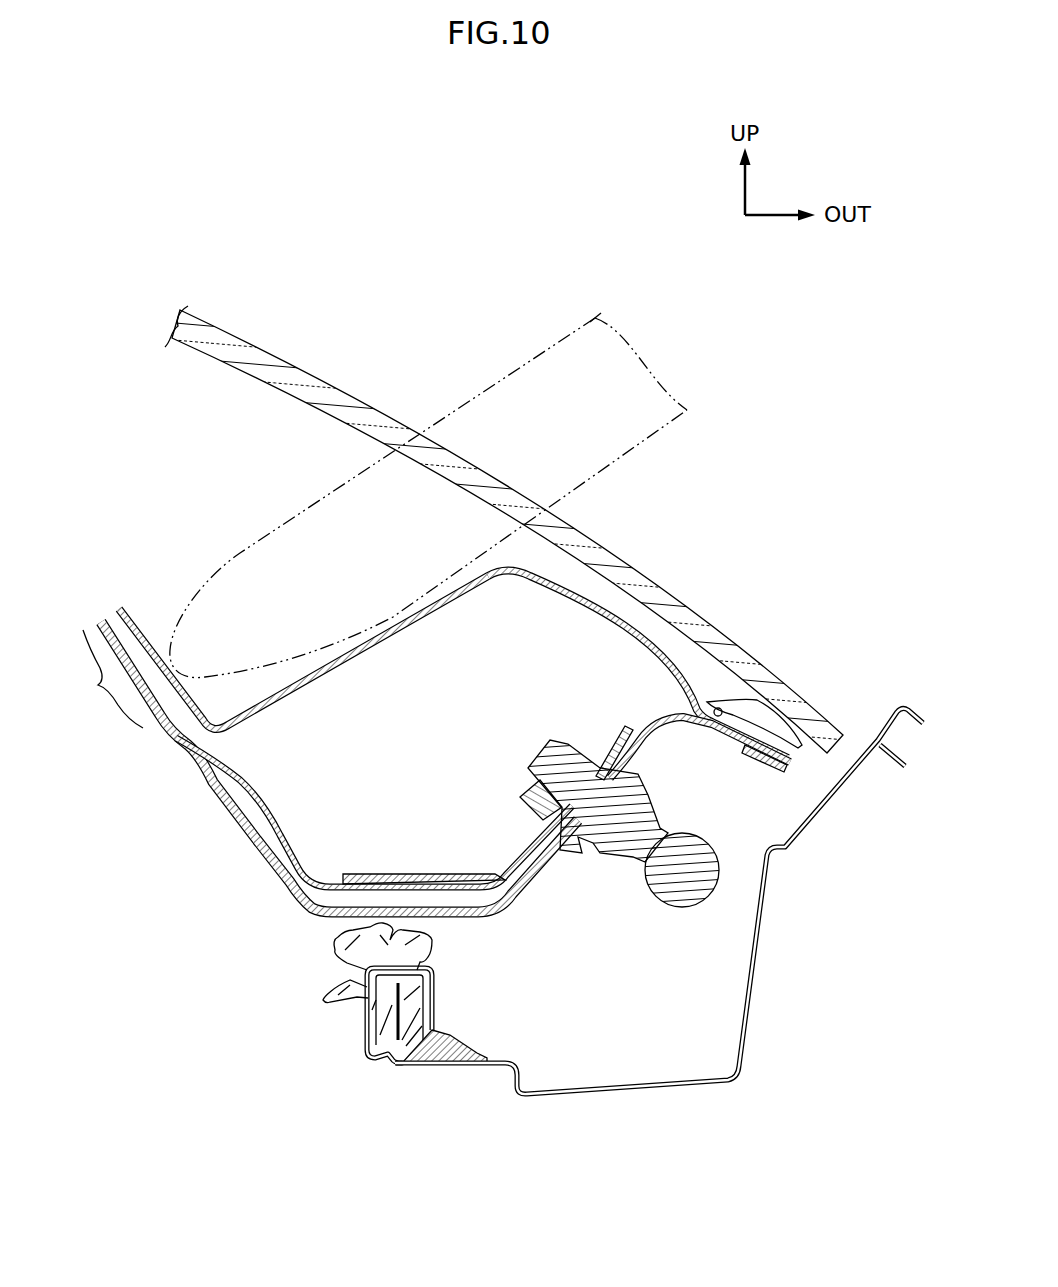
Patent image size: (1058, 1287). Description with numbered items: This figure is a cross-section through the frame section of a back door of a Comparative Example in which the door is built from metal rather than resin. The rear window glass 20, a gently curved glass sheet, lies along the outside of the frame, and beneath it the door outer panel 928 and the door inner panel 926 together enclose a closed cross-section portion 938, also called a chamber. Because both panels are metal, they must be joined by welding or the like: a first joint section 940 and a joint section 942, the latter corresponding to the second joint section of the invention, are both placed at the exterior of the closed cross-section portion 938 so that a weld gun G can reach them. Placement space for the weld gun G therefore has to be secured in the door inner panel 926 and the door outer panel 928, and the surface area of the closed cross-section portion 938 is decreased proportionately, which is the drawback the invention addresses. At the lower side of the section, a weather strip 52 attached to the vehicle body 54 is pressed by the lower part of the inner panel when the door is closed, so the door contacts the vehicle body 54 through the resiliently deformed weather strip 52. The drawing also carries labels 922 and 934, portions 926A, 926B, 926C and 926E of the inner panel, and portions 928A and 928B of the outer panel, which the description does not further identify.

The weld gun G is at (537, 356).
The rear window glass 20 is at (641, 575).
The weather strip 52 is at (328, 953).
The vehicle body 54 is at (620, 1088).
The pillar garnish 922 is at (445, 749).
The door inner panel 926 is at (445, 820).
The bracket upper wall 926A is at (548, 860).
The bracket lower wall 926B is at (470, 922).
The bracket engaging portion 926C is at (732, 744).
The bracket end portion 926E is at (228, 823).
The door outer panel 928 is at (453, 619).
The garnish outer wall 928A is at (582, 598).
The garnish inner wall 928B is at (393, 627).
The hook portion 934 is at (713, 731).
The closed cross-section portion 938 is at (462, 741).
The first joint section 940 is at (760, 698).
The joint section 942 is at (110, 693).